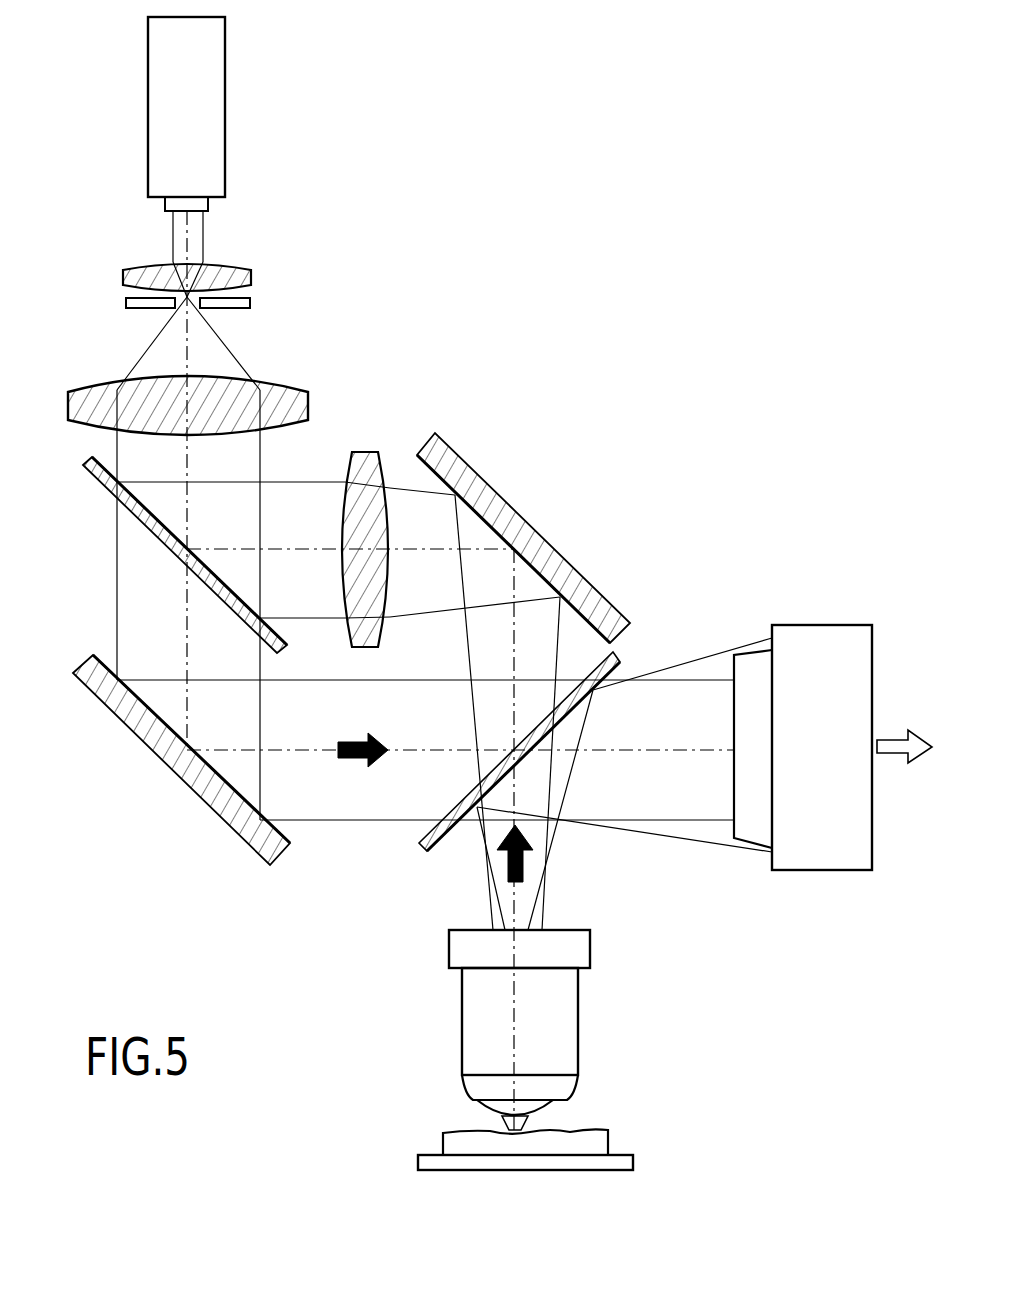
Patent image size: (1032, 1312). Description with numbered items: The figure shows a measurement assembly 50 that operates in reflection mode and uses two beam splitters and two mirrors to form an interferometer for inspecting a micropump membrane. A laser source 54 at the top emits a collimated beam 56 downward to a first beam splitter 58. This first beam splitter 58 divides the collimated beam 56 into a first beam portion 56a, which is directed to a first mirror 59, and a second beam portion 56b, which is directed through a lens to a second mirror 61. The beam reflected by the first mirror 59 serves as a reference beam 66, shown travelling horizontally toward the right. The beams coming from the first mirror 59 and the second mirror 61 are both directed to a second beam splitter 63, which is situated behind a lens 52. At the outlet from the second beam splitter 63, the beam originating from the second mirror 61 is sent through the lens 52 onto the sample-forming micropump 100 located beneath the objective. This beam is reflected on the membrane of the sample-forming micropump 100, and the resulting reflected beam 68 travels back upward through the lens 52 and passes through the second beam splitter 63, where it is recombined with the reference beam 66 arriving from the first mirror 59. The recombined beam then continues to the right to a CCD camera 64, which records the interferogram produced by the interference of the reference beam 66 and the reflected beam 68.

The measurement assembly 50 is at (577, 420).
The lens 52 is at (587, 1030).
The laser source 54 is at (165, 120).
The collimated beam 56 is at (133, 454).
The first beam portion 56a is at (153, 642).
The second beam portion 56b is at (308, 487).
The first beam splitter 58 is at (97, 478).
The first mirror 59 is at (197, 792).
The second mirror 61 is at (557, 567).
The second beam splitter 63 is at (425, 850).
The CCD camera 64 is at (829, 650).
The reference beam 66 is at (372, 720).
The reflected beam 68 is at (525, 862).
The sample-forming micropump 100 is at (592, 1143).